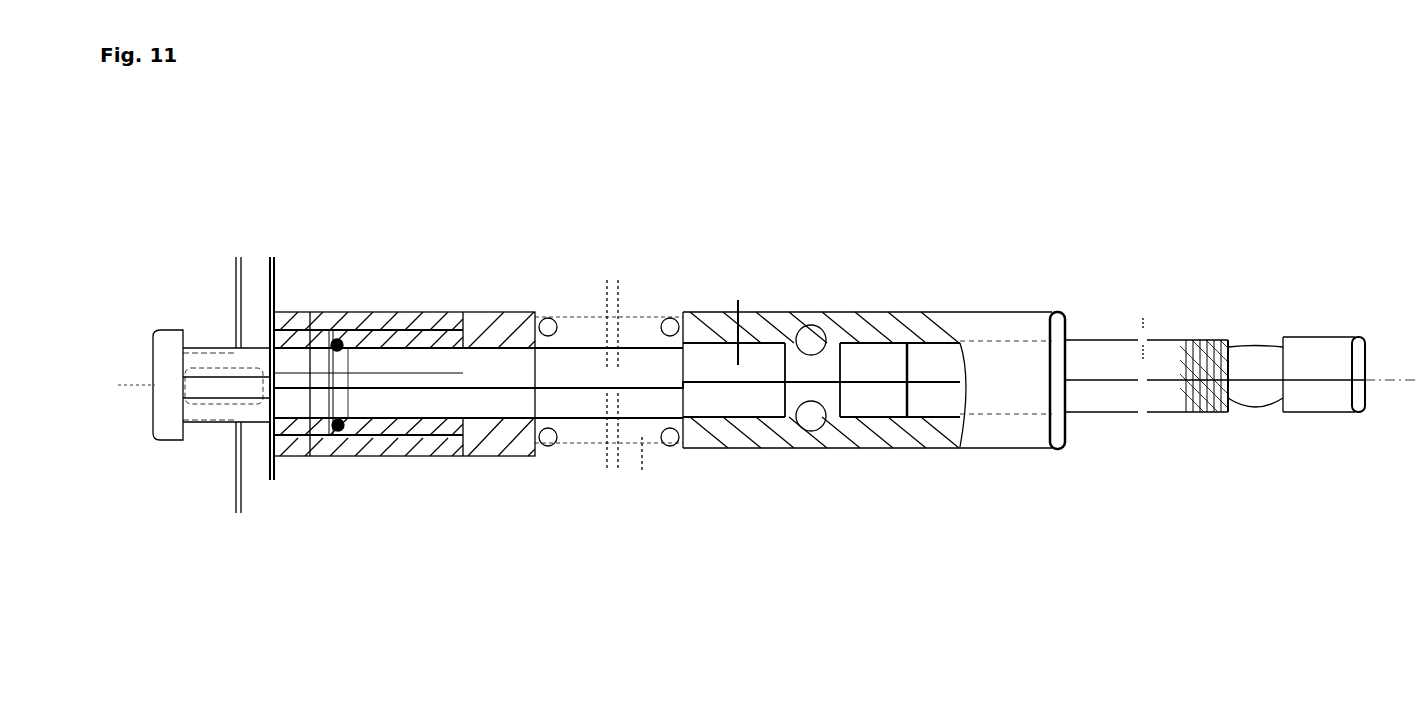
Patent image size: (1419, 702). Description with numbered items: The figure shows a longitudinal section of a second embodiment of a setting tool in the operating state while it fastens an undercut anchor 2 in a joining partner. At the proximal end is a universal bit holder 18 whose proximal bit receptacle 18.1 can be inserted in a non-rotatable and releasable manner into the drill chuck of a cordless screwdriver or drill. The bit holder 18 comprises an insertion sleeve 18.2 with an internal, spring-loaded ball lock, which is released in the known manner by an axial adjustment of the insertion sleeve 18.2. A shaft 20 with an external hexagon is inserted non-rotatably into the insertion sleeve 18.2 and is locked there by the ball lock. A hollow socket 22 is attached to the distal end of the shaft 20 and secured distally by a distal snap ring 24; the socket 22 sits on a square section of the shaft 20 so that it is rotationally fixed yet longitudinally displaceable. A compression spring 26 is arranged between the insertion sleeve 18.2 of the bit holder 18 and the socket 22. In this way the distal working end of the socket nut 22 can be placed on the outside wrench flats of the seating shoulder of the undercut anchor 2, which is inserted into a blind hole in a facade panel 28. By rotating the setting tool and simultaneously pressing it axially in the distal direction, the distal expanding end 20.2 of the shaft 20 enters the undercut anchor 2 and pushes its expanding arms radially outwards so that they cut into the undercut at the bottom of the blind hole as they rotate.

The undercut anchor 2 is at (205, 443).
The facade panel 28 is at (188, 282).
The distal expanding end 20.2 is at (269, 432).
The hollow socket 22 is at (502, 435).
The distal snap ring 24 is at (328, 338).
The shaft 20 is at (678, 410).
The compression spring 26 is at (667, 320).
The insertion sleeve 18.2 is at (888, 319).
The universal bit holder 18 is at (1010, 268).
The proximal bit receptacle 18.1 is at (1313, 346).